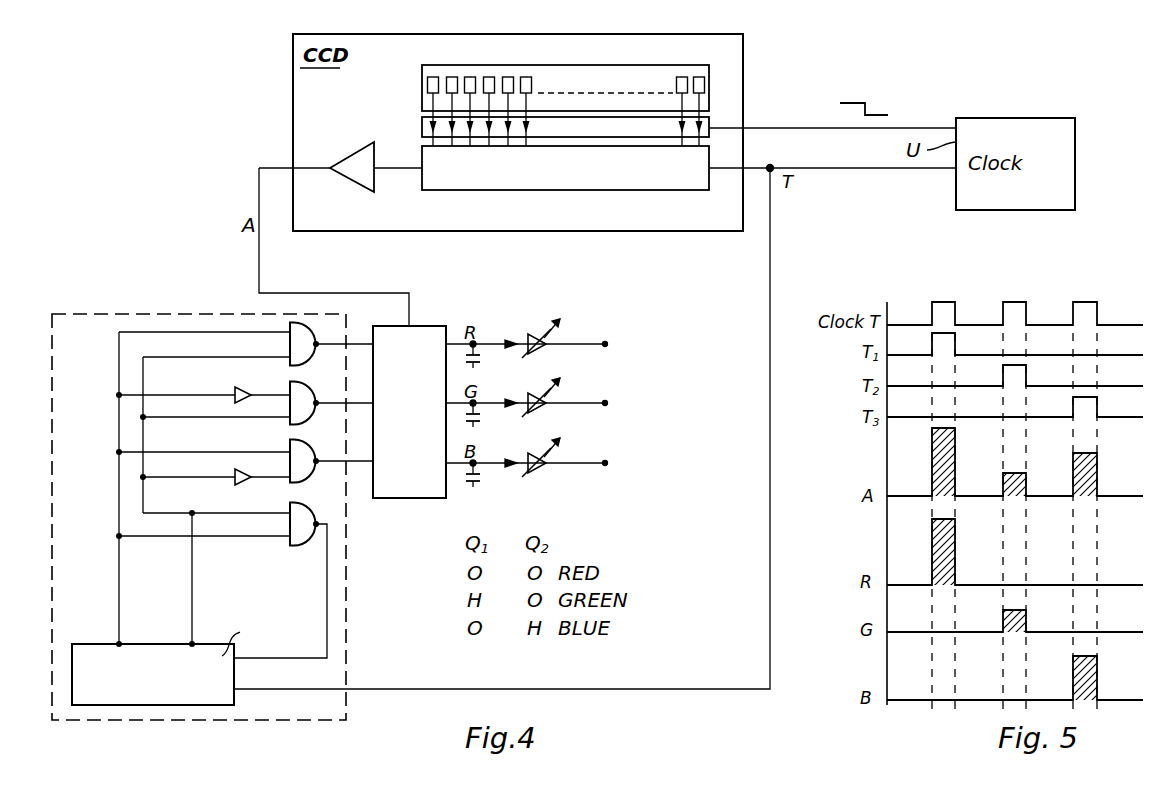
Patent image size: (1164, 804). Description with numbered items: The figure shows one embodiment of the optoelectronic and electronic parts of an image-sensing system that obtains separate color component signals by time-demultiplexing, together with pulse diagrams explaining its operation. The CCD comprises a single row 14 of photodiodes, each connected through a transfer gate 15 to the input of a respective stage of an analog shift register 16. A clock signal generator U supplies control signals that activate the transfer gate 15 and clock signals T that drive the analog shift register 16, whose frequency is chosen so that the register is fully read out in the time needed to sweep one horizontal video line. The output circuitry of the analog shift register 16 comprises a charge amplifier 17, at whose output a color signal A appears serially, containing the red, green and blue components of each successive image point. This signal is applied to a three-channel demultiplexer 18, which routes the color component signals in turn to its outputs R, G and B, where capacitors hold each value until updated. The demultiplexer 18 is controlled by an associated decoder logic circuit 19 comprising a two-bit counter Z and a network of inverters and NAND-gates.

The row of photodiodes 14 is at (712, 70).
The transfer gate 15 is at (709, 124).
The analog shift register 16 is at (709, 152).
The charge amplifier 17 is at (360, 163).
The three-channel demultiplexer 18 is at (437, 338).
The decoder logic circuit 19 is at (235, 327).